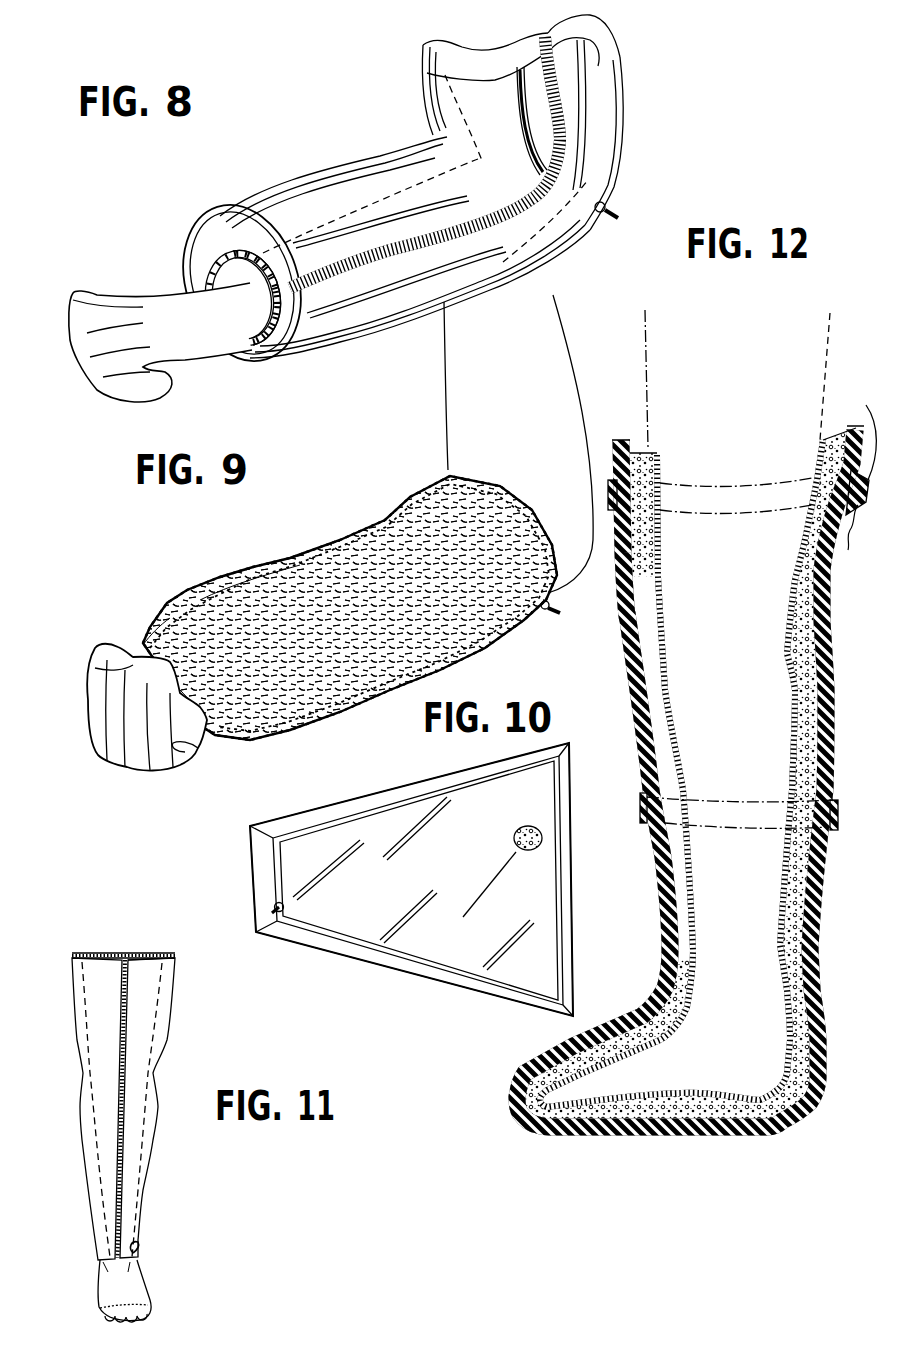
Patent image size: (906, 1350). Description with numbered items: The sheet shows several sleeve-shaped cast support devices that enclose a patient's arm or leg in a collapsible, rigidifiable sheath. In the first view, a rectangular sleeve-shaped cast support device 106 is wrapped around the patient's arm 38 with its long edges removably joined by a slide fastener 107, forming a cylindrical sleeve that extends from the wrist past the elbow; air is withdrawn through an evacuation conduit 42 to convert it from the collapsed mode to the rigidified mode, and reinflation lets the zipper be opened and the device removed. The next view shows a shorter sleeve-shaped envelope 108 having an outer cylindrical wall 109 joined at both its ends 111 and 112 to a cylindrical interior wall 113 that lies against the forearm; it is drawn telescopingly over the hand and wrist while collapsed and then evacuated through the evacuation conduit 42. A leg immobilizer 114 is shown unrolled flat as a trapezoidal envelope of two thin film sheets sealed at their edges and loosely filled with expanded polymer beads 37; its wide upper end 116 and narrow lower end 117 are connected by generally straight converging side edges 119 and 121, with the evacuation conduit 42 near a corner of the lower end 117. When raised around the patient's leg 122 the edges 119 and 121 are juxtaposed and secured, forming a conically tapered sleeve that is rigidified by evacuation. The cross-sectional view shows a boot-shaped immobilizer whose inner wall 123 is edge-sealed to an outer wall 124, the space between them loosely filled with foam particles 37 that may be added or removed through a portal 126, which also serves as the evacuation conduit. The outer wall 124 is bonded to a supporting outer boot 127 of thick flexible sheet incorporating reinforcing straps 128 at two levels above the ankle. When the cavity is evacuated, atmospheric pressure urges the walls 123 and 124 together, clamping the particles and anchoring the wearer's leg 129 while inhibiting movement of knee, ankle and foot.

In FIG. 12, the expanded polymer foam particles 37 is at (832, 642).
In FIG. 8, the arm 38 is at (437, 36).
In FIG. 8, the evacuation conduit 42 is at (605, 200).
In FIG. 9, the evacuation conduit 42 is at (545, 612).
In FIG. 10, the evacuation conduit 42 is at (284, 908).
In FIG. 11, the evacuation conduit 42 is at (138, 1242).
In FIG. 8, the sleeve-shaped cast support device 106 is at (345, 182).
In FIG. 8, the slide fastener 107 is at (562, 104).
In FIG. 9, the sleeve-shaped envelope 108 is at (343, 534).
In FIG. 9, the outer cylindrical wall 109 is at (213, 602).
In FIG. 9, the end of outer wall 111 is at (143, 638).
In FIG. 9, the end of outer wall 112 is at (512, 508).
In FIG. 9, the cylindrical interior wall 113 is at (181, 683).
In FIG. 10, the leg immobilizer 114 is at (452, 925).
In FIG. 10, the wide upper end 116 is at (575, 918).
In FIG. 11, the wide upper end 116 is at (155, 954).
In FIG. 10, the narrow lower end 117 is at (252, 893).
In FIG. 11, the narrow lower end 117 is at (103, 1267).
In FIG. 10, the converging side edge 119 is at (407, 788).
In FIG. 11, the converging side edge 119 is at (122, 1083).
In FIG. 10, the converging side edge 121 is at (362, 954).
In FIG. 11, the converging side edge 121 is at (127, 1075).
In FIG. 11, the patient's leg 122 is at (76, 946).
In FIG. 12, the patient's leg 122 is at (696, 776).
In FIG. 12, the inner wall 123 is at (660, 563).
In FIG. 12, the outer wall 124 is at (641, 612).
In FIG. 12, the portal 126 is at (862, 538).
In FIG. 12, the outer boot 127 is at (646, 852).
In FIG. 12, the reinforcing straps 128 is at (607, 790).
In FIG. 12, the leg 129 is at (645, 320).